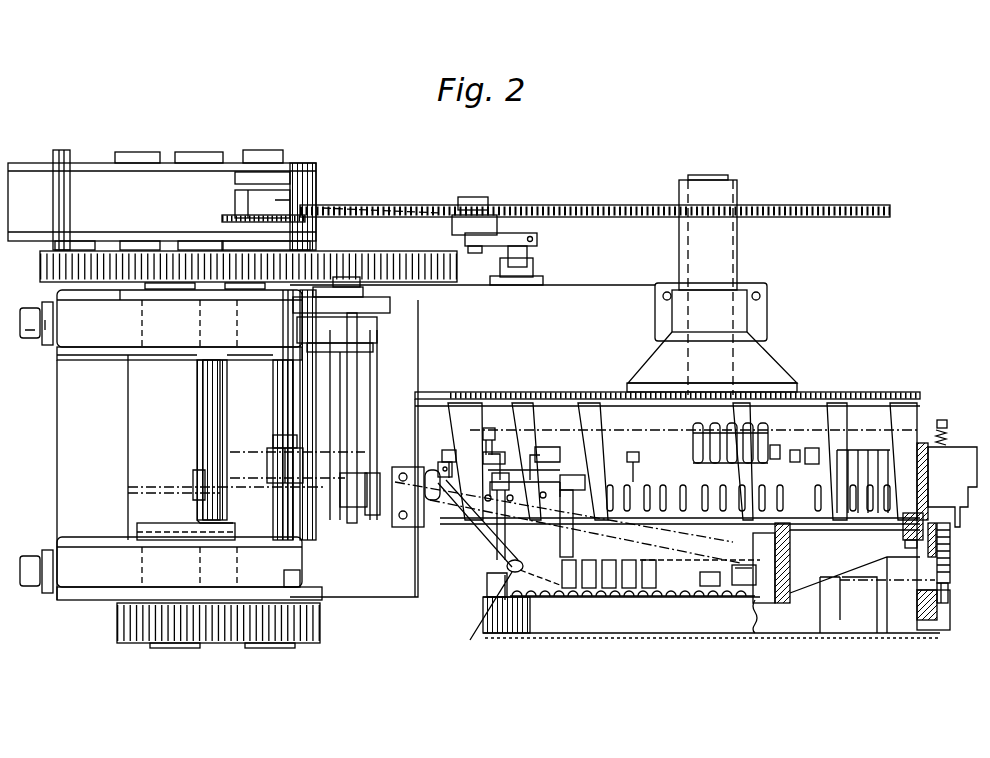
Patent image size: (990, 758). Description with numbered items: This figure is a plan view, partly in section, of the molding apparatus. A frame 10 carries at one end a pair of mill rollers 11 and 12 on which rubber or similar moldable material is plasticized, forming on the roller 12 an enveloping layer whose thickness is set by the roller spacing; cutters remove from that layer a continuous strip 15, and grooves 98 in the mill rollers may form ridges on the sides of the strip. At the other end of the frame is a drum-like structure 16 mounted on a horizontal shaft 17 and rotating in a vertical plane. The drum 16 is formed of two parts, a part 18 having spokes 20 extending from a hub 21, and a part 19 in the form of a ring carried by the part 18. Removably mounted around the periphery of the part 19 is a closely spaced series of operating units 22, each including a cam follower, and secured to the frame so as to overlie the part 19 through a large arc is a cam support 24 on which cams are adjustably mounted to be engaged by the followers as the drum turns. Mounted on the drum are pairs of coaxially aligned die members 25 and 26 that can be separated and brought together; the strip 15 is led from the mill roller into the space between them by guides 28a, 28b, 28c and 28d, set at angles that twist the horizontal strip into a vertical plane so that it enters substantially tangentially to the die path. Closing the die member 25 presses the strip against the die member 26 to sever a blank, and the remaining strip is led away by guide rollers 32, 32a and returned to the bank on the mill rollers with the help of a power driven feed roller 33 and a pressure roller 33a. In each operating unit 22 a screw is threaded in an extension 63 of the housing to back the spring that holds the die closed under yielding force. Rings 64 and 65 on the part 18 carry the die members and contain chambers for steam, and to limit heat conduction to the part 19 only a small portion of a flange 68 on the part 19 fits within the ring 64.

The frame 10 is at (397, 597).
The mill roller 11 is at (135, 437).
The mill roller 12 is at (304, 399).
The strip 15 is at (472, 400).
The drum-like structure 16 is at (852, 367).
The horizontal shaft 17 is at (740, 247).
The drum part 18 is at (888, 646).
The drum part 19 is at (926, 440).
The spokes 20 is at (858, 580).
The hub 21 is at (779, 604).
The operating unit 22 is at (964, 448).
The cam support 24 is at (874, 440).
The die member 25 is at (950, 566).
The die member 26 is at (949, 588).
The guide 28a is at (377, 472).
The guide 28b is at (346, 474).
The guide 28c is at (572, 640).
The guide 28d is at (742, 597).
The guide roller 32 is at (508, 640).
The guide roller 32a is at (421, 528).
The feed roller 33 is at (277, 441).
The pressure roller 33a is at (275, 463).
The extension 63 is at (944, 430).
The ring 64 is at (951, 547).
The ring 65 is at (950, 620).
The flange 68 is at (905, 530).
The grooves 98 is at (182, 483).